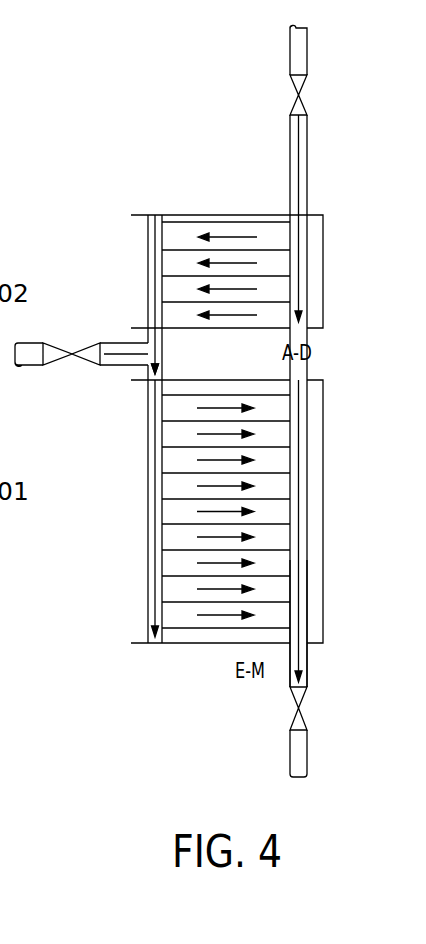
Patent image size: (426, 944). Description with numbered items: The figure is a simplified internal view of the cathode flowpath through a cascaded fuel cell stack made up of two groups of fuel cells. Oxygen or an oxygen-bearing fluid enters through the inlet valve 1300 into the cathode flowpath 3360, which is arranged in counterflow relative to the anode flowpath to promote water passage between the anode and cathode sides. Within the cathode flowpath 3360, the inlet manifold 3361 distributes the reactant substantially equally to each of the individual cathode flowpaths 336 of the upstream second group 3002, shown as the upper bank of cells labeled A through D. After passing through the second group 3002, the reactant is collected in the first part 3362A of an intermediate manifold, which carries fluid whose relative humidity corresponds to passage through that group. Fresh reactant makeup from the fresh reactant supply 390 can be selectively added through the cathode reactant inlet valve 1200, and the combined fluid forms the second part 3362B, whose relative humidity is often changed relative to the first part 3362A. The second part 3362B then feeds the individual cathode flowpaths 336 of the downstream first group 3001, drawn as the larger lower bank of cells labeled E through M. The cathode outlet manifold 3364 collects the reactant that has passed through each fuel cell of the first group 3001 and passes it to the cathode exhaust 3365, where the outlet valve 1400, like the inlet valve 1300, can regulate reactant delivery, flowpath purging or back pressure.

The inlet valve 1300 is at (307, 87).
The cathode flowpath 3360 is at (307, 173).
The inlet manifold 3361 is at (300, 262).
The second group 3002 is at (323, 278).
The first part of intermediate manifold 3362A is at (147, 333).
The cathode reactant inlet valve 1200 is at (60, 343).
The fresh reactant supply 390 is at (23, 367).
The second part of intermediate manifold 3362B is at (147, 374).
The individual cathode flowpaths 336 is at (208, 324).
The first group 3001 is at (323, 477).
The cathode outlet manifold 3364 is at (307, 570).
The outlet valve 1400 is at (307, 710).
The cathode exhaust 3365 is at (308, 763).